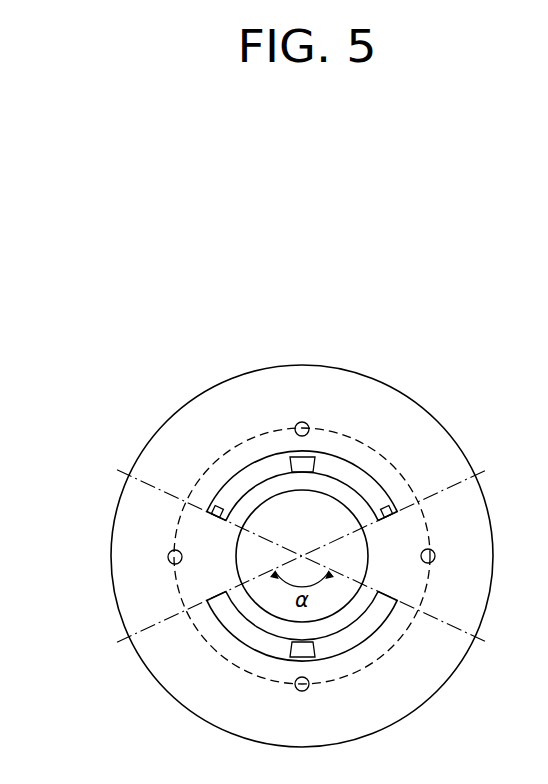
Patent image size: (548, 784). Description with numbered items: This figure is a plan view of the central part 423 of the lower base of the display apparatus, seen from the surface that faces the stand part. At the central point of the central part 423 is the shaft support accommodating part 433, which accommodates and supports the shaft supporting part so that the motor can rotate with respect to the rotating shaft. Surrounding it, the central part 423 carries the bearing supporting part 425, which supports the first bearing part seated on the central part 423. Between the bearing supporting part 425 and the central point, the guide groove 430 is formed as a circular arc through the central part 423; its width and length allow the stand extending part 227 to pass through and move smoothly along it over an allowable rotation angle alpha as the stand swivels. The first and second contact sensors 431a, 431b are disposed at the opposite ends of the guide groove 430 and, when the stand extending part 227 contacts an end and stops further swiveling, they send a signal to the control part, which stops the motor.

The central part 423 is at (185, 412).
The bearing supporting part 425 is at (302, 422).
The guide groove 430 is at (348, 462).
The first contact sensor 431a is at (212, 509).
The second contact sensor 431b is at (391, 502).
The shaft support accommodating part 433 is at (238, 557).
The stand extending part 227 is at (292, 457).